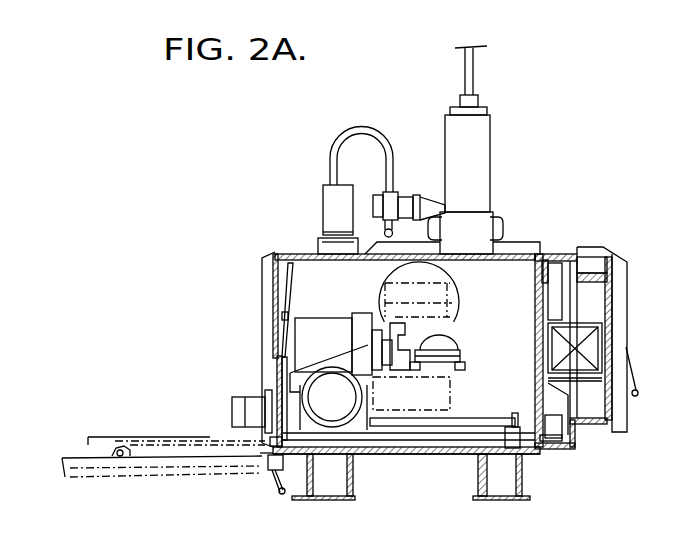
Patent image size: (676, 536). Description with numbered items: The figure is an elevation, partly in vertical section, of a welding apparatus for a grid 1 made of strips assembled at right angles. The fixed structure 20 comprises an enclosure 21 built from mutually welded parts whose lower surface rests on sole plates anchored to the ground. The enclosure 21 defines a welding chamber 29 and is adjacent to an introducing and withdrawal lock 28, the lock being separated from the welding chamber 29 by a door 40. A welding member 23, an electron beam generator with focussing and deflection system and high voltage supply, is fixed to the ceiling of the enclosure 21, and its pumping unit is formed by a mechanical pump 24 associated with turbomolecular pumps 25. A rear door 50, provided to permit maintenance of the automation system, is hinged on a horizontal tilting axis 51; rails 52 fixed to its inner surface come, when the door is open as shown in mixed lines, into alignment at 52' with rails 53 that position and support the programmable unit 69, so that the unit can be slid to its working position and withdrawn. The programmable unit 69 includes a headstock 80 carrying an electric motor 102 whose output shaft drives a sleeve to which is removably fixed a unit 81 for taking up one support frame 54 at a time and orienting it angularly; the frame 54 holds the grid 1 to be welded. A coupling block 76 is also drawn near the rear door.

The grid 1 is at (456, 356).
The fixed structure 20 is at (528, 471).
The enclosure 21 is at (300, 255).
The welding member 23 is at (472, 159).
The mechanical pump 24 is at (330, 201).
The turbomolecular pumps 25 is at (403, 205).
The introducing and withdrawal lock 28 is at (588, 303).
The welding chamber 29 is at (500, 283).
The door 40 is at (547, 267).
The rear door 50 is at (278, 300).
The horizontal tilting axis 51 is at (270, 471).
The rails 52 is at (248, 310).
The aligned position of rails 52' is at (163, 435).
The rails 53 is at (450, 448).
The support frame 54 is at (445, 348).
The programmable unit 69 is at (462, 389).
The coupling block 76 is at (237, 413).
The headstock 80 is at (338, 356).
The unit for taking up a frame 81 is at (423, 338).
The electric motor 102 is at (307, 340).